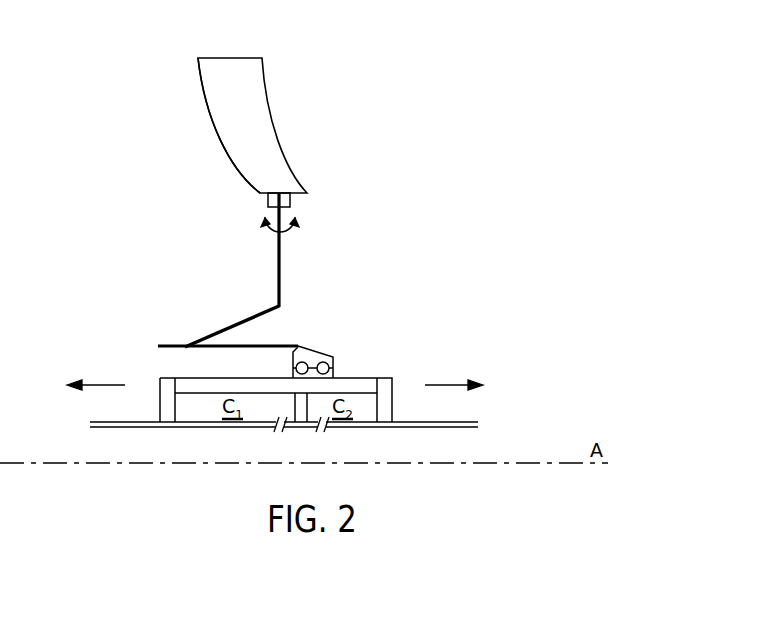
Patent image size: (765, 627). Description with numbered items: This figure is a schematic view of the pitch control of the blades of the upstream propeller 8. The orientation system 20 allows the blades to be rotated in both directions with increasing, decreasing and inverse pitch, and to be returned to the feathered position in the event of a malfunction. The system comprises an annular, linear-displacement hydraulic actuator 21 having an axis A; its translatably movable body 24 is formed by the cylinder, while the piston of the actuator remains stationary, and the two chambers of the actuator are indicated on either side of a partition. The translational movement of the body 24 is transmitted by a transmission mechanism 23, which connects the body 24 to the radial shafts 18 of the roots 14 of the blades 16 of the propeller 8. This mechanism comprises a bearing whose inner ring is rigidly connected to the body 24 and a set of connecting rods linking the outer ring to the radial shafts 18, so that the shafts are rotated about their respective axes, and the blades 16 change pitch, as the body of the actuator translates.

The upstream propeller 8 is at (257, 122).
The blades 16 is at (218, 100).
The roots 14 is at (291, 202).
The radial shafts 18 is at (281, 265).
The orientation system 20 is at (474, 276).
The hydraulic actuator 21 is at (393, 377).
The transmission mechanism 23 is at (292, 303).
The translatably movable body 24 is at (176, 378).